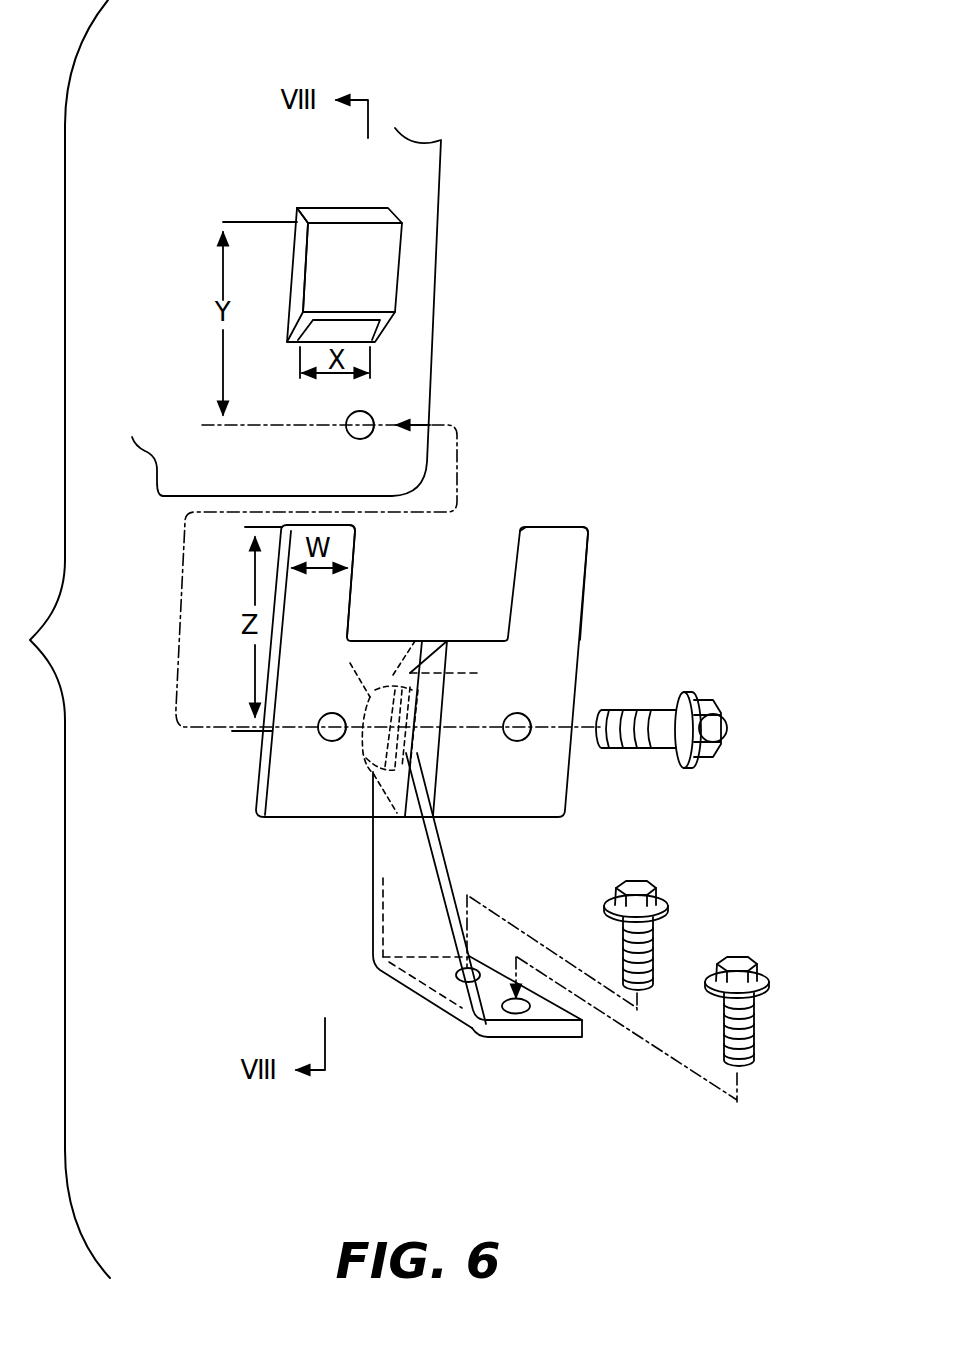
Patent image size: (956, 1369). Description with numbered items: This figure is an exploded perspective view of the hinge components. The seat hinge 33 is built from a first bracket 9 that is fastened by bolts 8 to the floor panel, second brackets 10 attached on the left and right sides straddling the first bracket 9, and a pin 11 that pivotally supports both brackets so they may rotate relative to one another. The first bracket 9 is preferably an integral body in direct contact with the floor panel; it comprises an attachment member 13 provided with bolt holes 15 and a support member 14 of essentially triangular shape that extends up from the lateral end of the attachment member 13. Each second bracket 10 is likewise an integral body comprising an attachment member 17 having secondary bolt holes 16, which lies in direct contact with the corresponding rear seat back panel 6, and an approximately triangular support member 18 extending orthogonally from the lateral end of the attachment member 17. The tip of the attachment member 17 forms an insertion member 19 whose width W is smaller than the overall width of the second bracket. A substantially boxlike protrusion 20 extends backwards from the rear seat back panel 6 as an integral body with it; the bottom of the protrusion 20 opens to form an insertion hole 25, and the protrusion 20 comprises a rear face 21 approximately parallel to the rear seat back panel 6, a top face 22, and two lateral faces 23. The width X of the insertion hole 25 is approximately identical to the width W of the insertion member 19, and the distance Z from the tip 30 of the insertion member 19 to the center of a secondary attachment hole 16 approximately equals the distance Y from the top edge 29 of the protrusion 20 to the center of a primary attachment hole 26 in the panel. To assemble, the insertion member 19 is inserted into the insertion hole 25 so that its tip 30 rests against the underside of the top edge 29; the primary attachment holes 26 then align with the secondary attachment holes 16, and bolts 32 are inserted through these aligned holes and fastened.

The rear seat back panel 6 is at (336, 312).
The bolts 8 is at (737, 957).
The first bracket 9 is at (438, 920).
The second bracket 10 is at (422, 667).
The pin 11 is at (353, 680).
The attachment member 13 is at (548, 1014).
The support member 14 is at (375, 904).
The bolt holes 15 is at (510, 1013).
The secondary attachment holes 16 is at (517, 744).
The attachment member 17 is at (460, 642).
The support member 18 is at (434, 681).
The insertion member 19 is at (530, 553).
The protrusion 20 is at (365, 244).
The rear face 21 is at (388, 272).
The top face 22 is at (355, 208).
The lateral faces 23 is at (297, 262).
The insertion hole 25 is at (340, 326).
The primary attachment hole 26 is at (367, 418).
The top edge 29 is at (313, 213).
The tip 30 is at (548, 514).
The bolts 32 is at (727, 730).
The seat hinge 33 is at (464, 658).